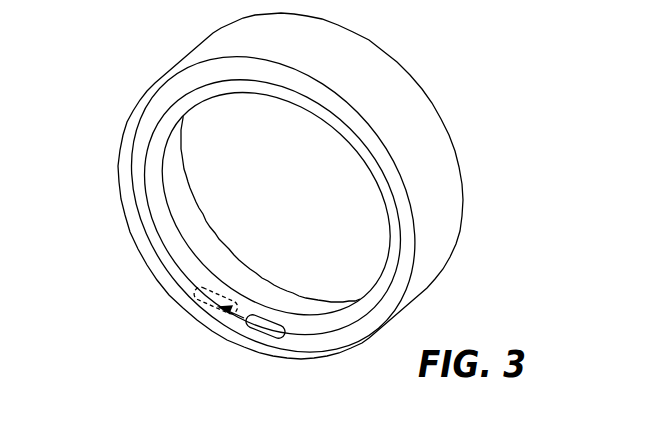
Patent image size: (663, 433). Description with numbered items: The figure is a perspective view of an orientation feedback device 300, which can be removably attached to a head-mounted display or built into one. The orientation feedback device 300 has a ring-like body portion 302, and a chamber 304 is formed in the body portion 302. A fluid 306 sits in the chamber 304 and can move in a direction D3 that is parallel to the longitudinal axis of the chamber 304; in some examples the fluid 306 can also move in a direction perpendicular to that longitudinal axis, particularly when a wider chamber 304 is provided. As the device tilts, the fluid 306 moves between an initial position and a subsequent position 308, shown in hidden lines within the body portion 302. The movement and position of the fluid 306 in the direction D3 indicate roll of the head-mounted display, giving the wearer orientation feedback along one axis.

The orientation feedback device 300 is at (428, 66).
The body portion 302 is at (122, 151).
The chamber 304 is at (166, 267).
The fluid 306 is at (266, 339).
The subsequent position 308 is at (198, 300).
The direction D3 is at (236, 314).